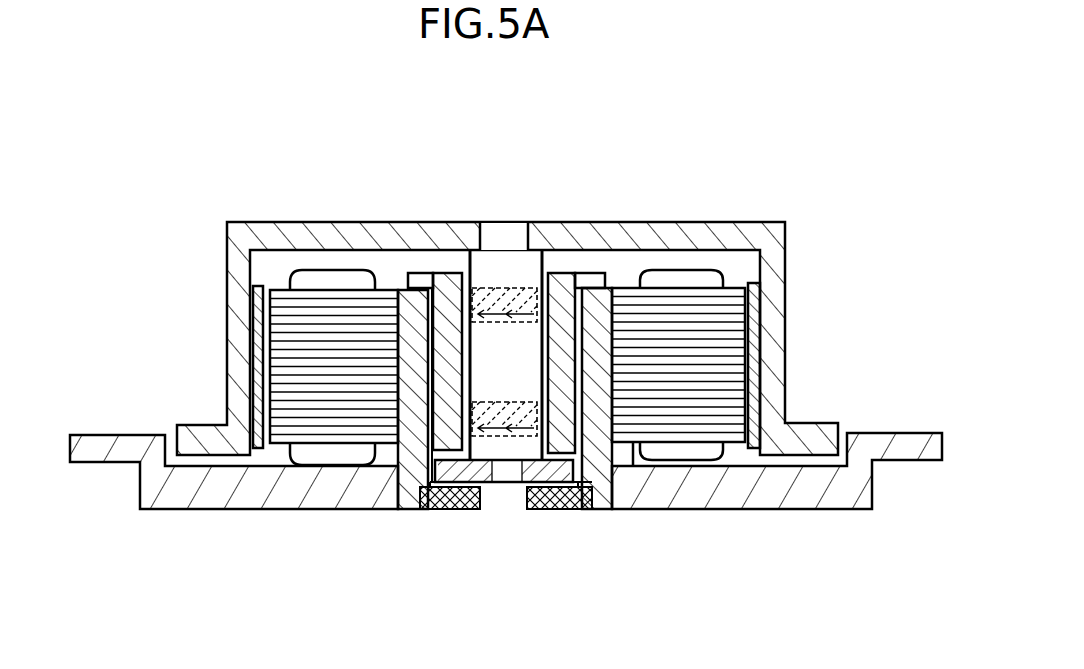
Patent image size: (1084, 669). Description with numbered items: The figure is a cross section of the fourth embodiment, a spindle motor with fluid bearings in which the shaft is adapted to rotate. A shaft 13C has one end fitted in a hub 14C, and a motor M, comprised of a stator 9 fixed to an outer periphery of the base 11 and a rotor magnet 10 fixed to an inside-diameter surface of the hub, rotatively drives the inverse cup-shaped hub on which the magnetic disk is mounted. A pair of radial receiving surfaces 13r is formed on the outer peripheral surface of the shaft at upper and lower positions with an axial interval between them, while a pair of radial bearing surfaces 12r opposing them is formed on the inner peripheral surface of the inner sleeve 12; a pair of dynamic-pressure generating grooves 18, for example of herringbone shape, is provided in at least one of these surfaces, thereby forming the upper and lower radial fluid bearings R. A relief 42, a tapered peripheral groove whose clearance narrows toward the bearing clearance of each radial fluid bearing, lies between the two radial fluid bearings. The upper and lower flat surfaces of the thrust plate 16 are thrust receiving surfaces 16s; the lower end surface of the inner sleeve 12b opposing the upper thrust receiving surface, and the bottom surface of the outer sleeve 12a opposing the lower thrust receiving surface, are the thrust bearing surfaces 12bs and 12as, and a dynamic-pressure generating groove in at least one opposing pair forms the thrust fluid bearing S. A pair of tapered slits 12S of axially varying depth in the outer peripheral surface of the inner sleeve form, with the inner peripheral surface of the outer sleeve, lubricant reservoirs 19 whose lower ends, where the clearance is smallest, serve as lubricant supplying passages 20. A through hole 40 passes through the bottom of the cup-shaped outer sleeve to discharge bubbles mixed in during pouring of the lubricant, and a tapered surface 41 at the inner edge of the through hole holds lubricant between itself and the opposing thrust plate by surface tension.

The stator 9 is at (727, 327).
The rotor magnet 10 is at (753, 362).
The motor M is at (845, 307).
The base 11 is at (818, 503).
The inner sleeve 12 is at (737, 557).
The outer sleeve 12a is at (628, 438).
The inner sleeve 12b is at (600, 430).
The thrust bearing surface 12as is at (554, 468).
The thrust bearing surface 12bs is at (541, 500).
The radial bearing surfaces 12r is at (448, 300).
The tapered slits 12S is at (585, 290).
The radial receiving surfaces 13r is at (430, 297).
The shaft 13C is at (543, 293).
The hub 14C is at (719, 229).
The thrust plate 16 is at (492, 500).
The thrust receiving surfaces 16s is at (436, 486).
The dynamic-pressure generating grooves 18 is at (496, 287).
The lubricant reservoirs 19 is at (428, 290).
The lubricant supplying passages 20 is at (426, 420).
The through hole 40 is at (521, 486).
The tapered surface 41 is at (486, 494).
The relief 42 is at (452, 375).
The radial fluid bearing R is at (518, 137).
The thrust fluid bearing S is at (432, 440).